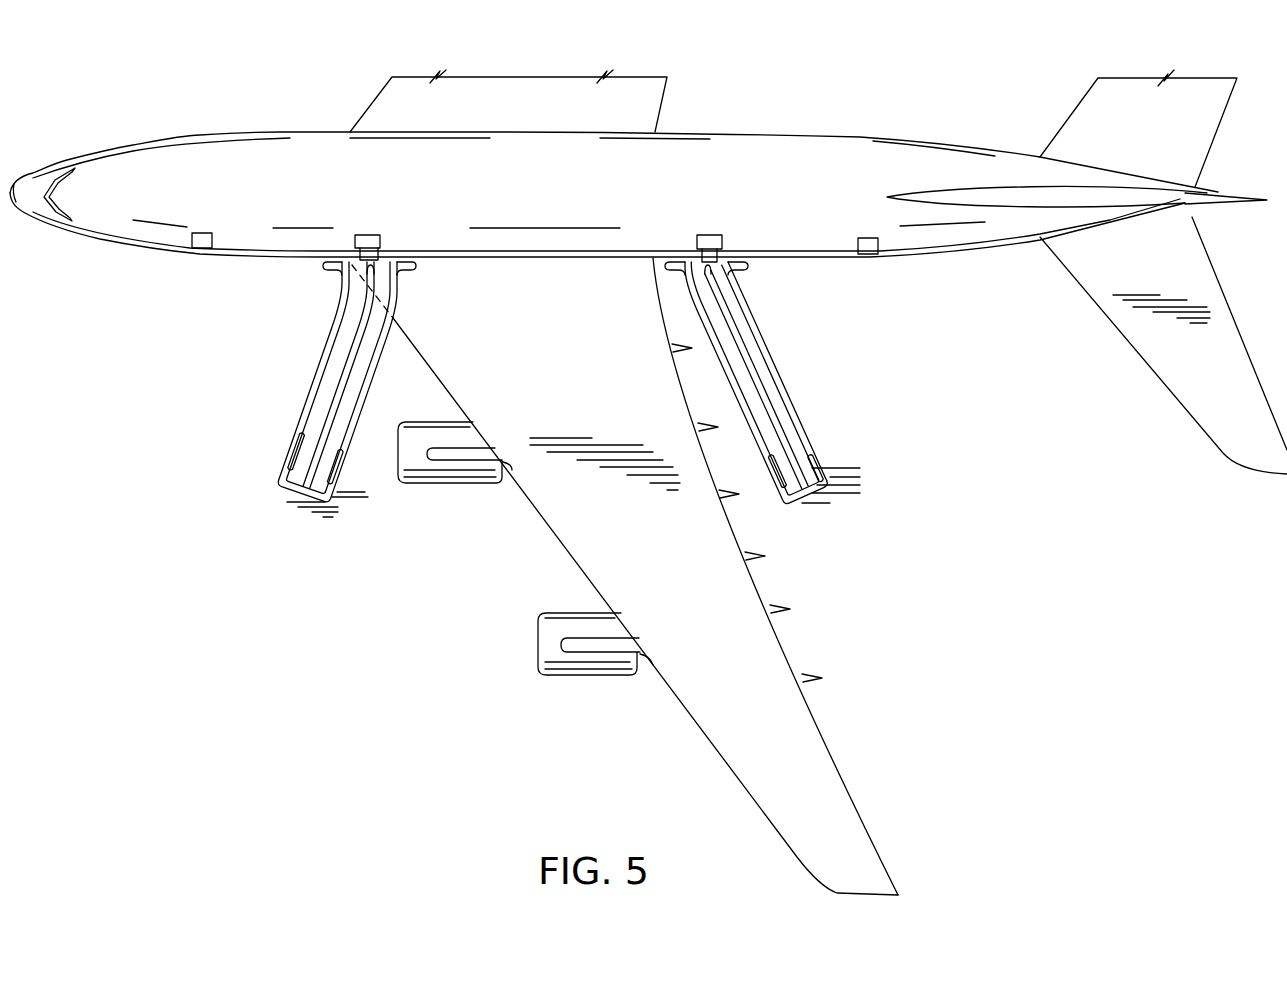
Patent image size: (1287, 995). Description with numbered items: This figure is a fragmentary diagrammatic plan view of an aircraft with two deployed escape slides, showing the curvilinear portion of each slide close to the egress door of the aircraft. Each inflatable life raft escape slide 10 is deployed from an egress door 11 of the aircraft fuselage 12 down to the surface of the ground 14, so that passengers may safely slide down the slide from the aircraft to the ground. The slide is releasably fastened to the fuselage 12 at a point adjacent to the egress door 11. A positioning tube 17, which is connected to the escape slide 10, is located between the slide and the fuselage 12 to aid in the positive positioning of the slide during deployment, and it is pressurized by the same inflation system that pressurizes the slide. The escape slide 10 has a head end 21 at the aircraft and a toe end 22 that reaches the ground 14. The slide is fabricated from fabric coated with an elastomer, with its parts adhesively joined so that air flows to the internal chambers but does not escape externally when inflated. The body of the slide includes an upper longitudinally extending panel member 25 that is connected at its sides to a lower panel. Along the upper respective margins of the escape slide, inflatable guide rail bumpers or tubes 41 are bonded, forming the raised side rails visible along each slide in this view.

The inflatable life raft escape slide 10 is at (549, 413).
The egress door 11 is at (374, 236).
The aircraft fuselage 12 is at (230, 265).
The ground 14 is at (344, 506).
The positioning tube 17 is at (327, 269).
The head end 21 is at (409, 274).
The toe end 22 is at (276, 495).
The upper longitudinally extending panel member 25 is at (307, 421).
The inflatable guide rail bumpers 41 is at (366, 403).